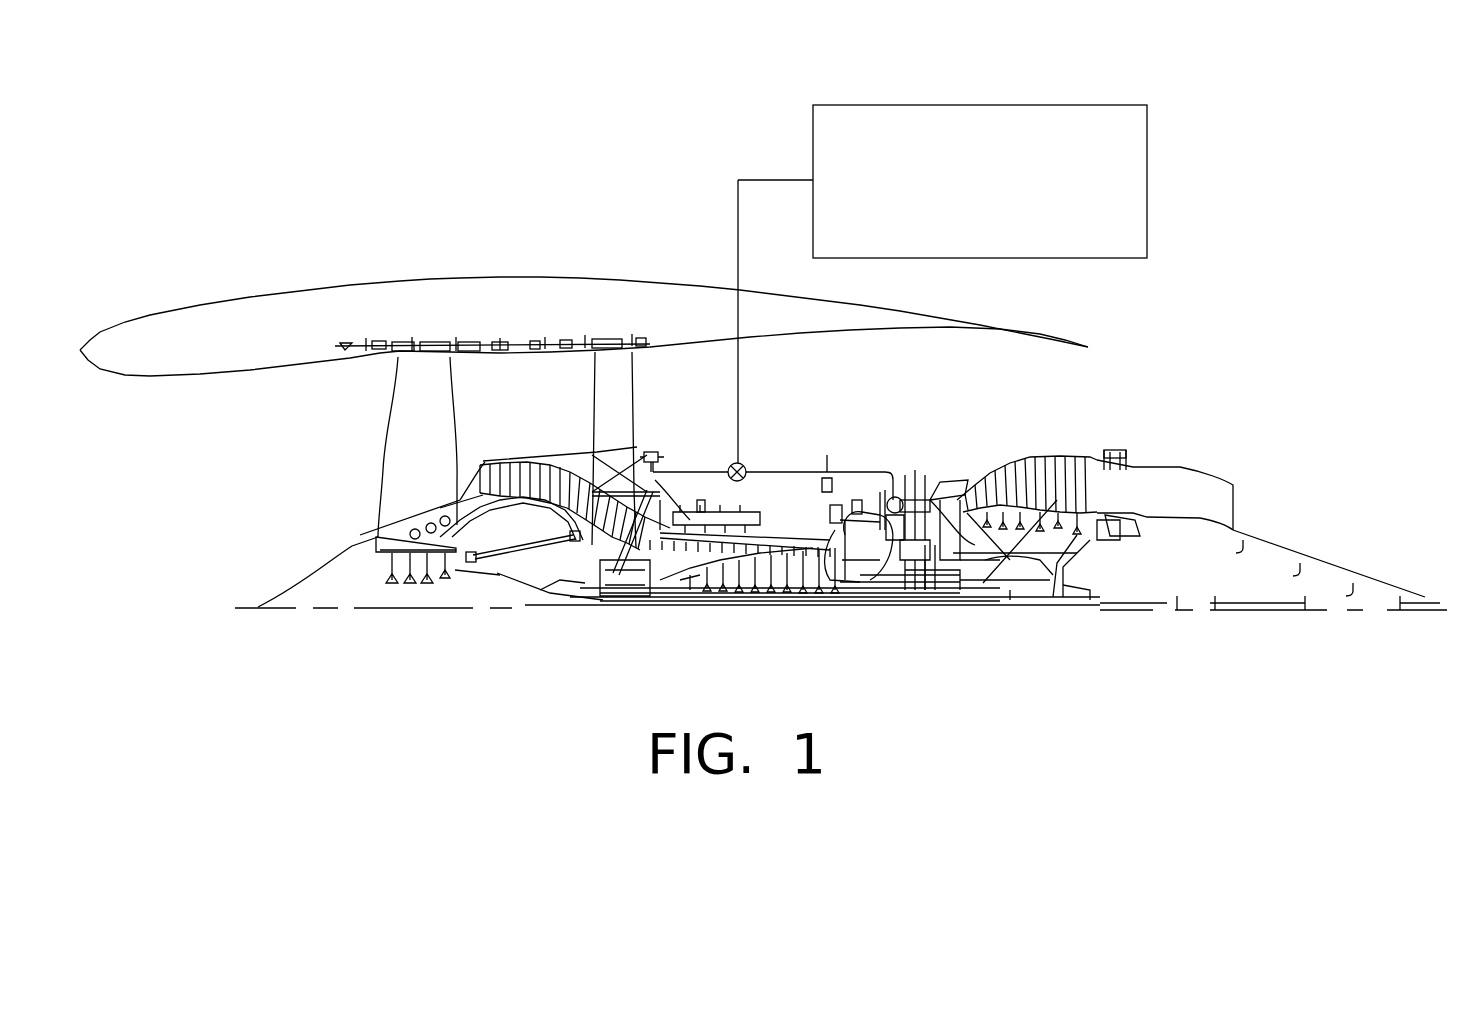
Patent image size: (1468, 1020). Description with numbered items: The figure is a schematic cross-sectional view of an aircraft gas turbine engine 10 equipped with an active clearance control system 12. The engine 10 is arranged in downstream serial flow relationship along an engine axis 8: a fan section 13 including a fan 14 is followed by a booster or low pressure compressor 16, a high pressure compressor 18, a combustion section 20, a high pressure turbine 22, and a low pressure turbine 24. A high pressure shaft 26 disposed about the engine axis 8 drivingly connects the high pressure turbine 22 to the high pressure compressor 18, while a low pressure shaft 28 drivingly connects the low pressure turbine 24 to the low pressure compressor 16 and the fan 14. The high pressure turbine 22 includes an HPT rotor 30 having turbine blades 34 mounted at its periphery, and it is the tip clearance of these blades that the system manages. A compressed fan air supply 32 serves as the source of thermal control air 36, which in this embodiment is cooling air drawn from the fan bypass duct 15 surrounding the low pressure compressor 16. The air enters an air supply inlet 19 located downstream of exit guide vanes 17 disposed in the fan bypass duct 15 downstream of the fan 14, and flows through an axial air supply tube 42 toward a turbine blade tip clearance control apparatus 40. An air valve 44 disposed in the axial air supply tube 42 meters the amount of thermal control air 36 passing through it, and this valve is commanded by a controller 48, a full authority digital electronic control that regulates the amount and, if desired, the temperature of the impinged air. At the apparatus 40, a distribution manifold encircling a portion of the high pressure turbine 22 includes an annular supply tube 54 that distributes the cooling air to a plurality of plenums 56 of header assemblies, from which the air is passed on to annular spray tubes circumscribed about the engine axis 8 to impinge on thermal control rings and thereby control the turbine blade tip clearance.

The engine axis 8 is at (413, 610).
The aircraft gas turbine engine 10 is at (263, 678).
The active clearance control system 12 is at (826, 420).
The fan section 13 is at (492, 291).
The fan 14 is at (440, 434).
The fan bypass duct 15 is at (518, 380).
The low pressure compressor 16 is at (527, 462).
The exit guide vanes 17 is at (636, 371).
The high pressure compressor 18 is at (745, 515).
The air supply inlet 19 is at (652, 452).
The combustion section 20 is at (845, 535).
The high pressure turbine 22 is at (927, 590).
The low pressure turbine 24 is at (1060, 460).
The high pressure shaft 26 is at (850, 590).
The low pressure shaft 28 is at (1010, 607).
The HPT rotor 30 is at (887, 590).
The compressed fan air supply 32 is at (708, 462).
The turbine blades 34 is at (984, 465).
The thermal control air 36 is at (700, 478).
The turbine blade tip clearance control apparatus 40 is at (926, 498).
The axial air supply tube 42 is at (827, 458).
The air valve 44 is at (745, 470).
The controller 48 is at (1002, 192).
The annular supply tube 54 is at (910, 472).
The plenums 56 is at (886, 505).